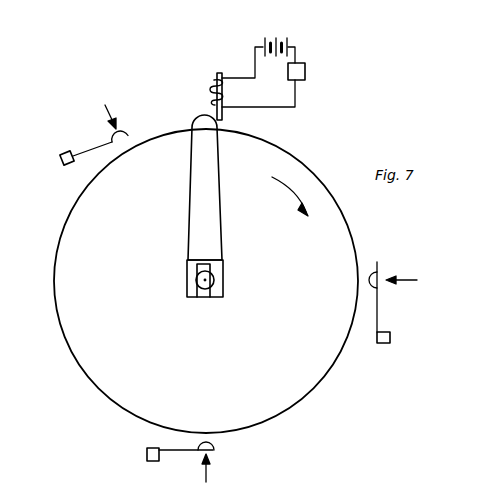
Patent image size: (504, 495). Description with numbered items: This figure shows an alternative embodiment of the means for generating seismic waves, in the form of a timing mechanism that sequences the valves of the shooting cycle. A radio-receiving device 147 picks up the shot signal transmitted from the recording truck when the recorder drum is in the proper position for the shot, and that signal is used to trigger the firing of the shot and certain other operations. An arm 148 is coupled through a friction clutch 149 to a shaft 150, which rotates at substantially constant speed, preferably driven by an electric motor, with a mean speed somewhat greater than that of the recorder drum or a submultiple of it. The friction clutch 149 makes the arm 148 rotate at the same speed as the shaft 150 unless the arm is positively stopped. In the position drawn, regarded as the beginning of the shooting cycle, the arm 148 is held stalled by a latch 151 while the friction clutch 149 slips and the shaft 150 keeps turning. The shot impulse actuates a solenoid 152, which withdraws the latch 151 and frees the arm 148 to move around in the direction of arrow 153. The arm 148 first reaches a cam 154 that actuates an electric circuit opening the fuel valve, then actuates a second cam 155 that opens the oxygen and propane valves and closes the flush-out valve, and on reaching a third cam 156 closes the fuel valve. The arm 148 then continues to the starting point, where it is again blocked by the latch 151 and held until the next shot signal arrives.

The radio-receiving device 147 is at (305, 72).
The arm 148 is at (222, 235).
The friction clutch 149 is at (212, 270).
The shaft 150 is at (213, 283).
The latch 151 is at (222, 116).
The solenoid 152 is at (213, 82).
The arrow 153 is at (282, 190).
The cam 154 is at (377, 262).
The second cam 155 is at (216, 446).
The third cam 156 is at (118, 130).